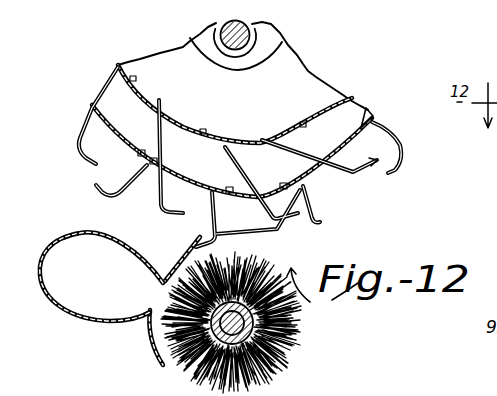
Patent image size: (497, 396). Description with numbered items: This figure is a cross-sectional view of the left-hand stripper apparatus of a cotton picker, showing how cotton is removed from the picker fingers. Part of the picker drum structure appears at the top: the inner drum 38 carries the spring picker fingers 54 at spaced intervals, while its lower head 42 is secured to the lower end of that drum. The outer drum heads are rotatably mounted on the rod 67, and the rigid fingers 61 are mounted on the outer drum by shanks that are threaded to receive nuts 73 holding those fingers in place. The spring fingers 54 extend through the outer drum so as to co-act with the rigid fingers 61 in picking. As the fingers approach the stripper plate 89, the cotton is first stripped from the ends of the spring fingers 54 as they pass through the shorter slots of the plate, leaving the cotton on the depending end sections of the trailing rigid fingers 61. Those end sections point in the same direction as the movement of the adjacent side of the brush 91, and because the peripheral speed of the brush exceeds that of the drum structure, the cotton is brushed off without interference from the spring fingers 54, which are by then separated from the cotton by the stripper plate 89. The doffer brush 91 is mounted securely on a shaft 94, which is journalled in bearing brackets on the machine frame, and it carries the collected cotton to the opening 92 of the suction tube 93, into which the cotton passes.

The inner drum 38 is at (207, 129).
The lower head 42 is at (300, 77).
The spring picker fingers 54 is at (358, 178).
The rigid fingers 61 is at (387, 137).
The rod 67 is at (253, 36).
The nuts 73 is at (367, 110).
The stripper plate 89 is at (267, 225).
The doffer brush 91 is at (284, 370).
The openings of the suction tubes 92 is at (157, 299).
The suction tubes 93 is at (92, 322).
The shafts 94 is at (265, 331).